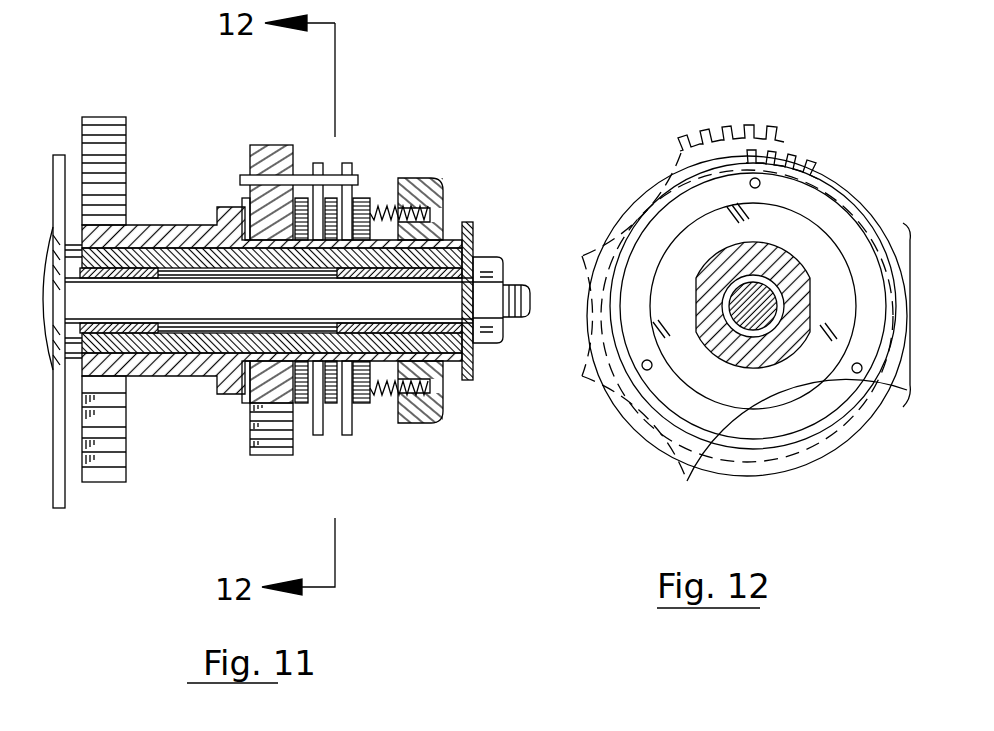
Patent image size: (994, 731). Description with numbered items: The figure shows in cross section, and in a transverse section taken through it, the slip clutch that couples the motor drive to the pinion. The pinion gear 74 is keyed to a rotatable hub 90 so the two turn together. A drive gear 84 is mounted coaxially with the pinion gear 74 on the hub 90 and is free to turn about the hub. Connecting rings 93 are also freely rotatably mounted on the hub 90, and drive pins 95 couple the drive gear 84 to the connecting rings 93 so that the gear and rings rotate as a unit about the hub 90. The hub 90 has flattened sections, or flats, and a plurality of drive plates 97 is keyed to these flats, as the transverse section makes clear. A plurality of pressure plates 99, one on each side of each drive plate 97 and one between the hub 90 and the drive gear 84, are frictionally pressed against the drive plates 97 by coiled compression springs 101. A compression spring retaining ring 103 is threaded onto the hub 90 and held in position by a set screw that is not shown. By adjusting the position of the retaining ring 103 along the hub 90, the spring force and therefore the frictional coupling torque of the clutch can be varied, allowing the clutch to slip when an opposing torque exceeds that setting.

In FIG. 11, the pinion gear 74 is at (94, 117).
In FIG. 11, the drive gear 84 is at (260, 145).
In FIG. 11, the rotatable hub 90 is at (228, 396).
In FIG. 12, the rotatable hub 90 is at (727, 357).
In FIG. 11, the connecting rings 93 is at (327, 165).
In FIG. 12, the connecting rings 93 is at (770, 182).
In FIG. 11, the drive pins 95 is at (359, 181).
In FIG. 12, the drive pins 95 is at (757, 178).
In FIG. 11, the drive plates 97 is at (300, 404).
In FIG. 12, the drive plates 97 is at (775, 218).
In FIG. 11, the pressure plates 99 is at (243, 199).
In FIG. 11, the coiled compression springs 101 is at (445, 200).
In FIG. 11, the compression spring retaining ring 103 is at (468, 222).